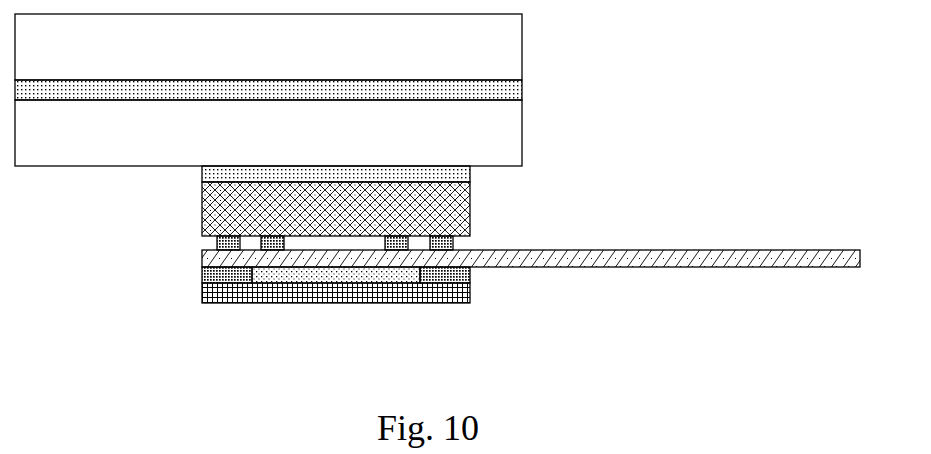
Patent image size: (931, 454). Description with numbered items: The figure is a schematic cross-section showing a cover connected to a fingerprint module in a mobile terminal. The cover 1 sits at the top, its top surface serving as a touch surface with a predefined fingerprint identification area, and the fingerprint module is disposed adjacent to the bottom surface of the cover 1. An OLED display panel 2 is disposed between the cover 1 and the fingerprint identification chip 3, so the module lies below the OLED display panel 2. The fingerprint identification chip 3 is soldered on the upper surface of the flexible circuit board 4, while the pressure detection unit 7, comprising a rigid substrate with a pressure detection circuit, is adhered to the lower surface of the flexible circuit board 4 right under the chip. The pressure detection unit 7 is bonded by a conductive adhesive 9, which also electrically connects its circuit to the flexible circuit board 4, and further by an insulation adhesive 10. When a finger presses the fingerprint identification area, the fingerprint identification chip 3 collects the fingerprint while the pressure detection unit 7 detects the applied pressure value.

The cover 1 is at (496, 48).
The OLED display panel 2 is at (485, 140).
The fingerprint identification chip 3 is at (461, 217).
The flexible circuit board 4 is at (716, 267).
The pressure detection unit 7 is at (300, 302).
The conductive adhesive 9 is at (211, 272).
The insulation adhesive 10 is at (368, 277).